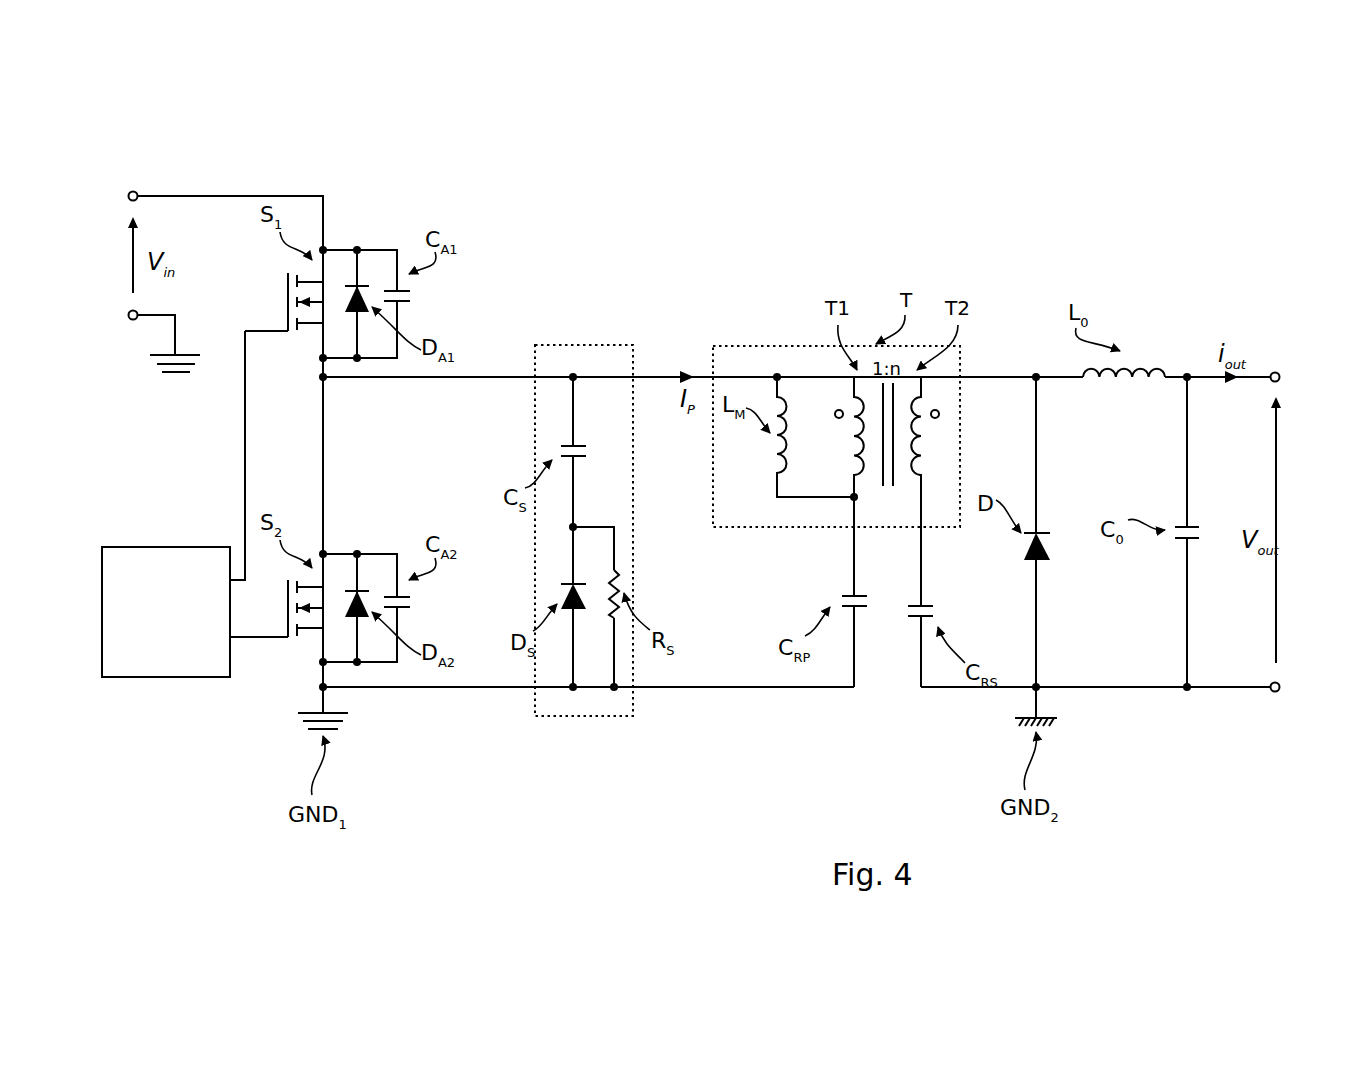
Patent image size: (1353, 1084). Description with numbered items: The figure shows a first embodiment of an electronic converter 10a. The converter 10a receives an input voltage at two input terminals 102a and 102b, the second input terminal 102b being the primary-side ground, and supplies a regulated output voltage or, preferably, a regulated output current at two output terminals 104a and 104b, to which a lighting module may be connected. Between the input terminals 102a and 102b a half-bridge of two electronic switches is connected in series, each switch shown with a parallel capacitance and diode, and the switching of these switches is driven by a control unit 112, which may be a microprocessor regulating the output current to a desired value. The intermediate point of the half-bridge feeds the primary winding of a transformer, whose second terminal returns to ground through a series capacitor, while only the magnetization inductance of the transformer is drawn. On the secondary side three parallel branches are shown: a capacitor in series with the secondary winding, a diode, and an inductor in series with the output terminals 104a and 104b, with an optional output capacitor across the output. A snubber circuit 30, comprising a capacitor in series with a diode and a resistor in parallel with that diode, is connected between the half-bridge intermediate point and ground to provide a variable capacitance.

The electronic converter 10a is at (938, 206).
The snubber circuit 30 is at (580, 339).
The first input terminal 102a is at (146, 180).
The second input terminal 102b is at (131, 325).
The first output terminal 104a is at (1283, 357).
The second output terminal 104b is at (1275, 701).
The control unit 112 is at (175, 668).